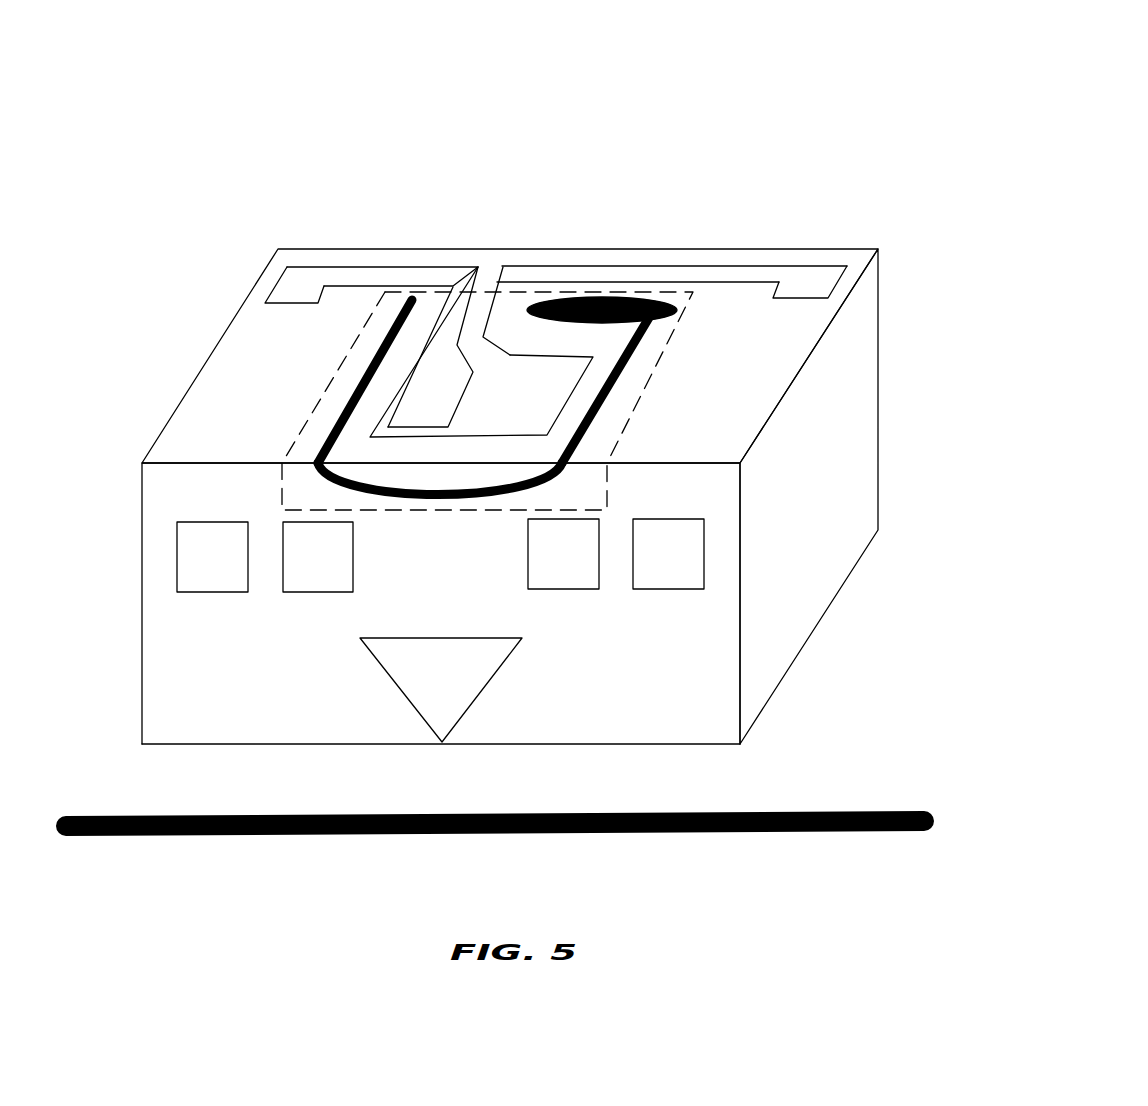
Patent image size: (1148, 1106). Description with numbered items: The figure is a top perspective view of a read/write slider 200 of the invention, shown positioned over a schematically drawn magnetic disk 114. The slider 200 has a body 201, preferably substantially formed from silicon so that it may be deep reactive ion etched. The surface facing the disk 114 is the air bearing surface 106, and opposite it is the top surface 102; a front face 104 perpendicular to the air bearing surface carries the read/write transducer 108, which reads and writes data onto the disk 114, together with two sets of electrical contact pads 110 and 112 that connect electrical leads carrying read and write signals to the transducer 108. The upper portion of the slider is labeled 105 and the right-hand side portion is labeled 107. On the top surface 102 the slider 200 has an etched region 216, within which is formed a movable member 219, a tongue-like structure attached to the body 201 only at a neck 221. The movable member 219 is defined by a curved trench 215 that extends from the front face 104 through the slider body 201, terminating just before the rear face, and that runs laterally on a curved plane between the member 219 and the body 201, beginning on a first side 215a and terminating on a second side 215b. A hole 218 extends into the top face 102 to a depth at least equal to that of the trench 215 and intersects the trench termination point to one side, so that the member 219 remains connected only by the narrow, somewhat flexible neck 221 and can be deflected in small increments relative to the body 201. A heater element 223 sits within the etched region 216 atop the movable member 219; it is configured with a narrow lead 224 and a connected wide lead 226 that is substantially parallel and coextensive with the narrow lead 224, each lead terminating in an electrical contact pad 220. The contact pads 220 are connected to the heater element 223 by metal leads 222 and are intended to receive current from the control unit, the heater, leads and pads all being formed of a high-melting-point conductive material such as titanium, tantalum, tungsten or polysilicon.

The read/write slider 200 is at (507, 418).
The top surface 102 is at (230, 412).
The front face 104 is at (165, 676).
The top side 105 is at (544, 336).
The air bearing surface 106 is at (586, 762).
The right side surface 107 is at (830, 510).
The read/write transducer 108 is at (503, 663).
The electrical contact pads 110 is at (218, 595).
The electrical contact pads 112 is at (563, 590).
The magnetic disk 114 is at (272, 836).
The body 201 is at (777, 496).
The curved trench 215 is at (494, 440).
The first side 215a is at (363, 373).
The second side 215b is at (632, 357).
The etched region 216 is at (637, 403).
The hole 218 is at (603, 297).
The movable member 219 is at (461, 489).
The electrical contact pad 220 is at (303, 287).
The neck 221 is at (507, 293).
The metal leads 222 is at (566, 237).
The heater element 223 is at (488, 392).
The narrow lead 224 is at (428, 338).
The wide lead 226 is at (553, 391).